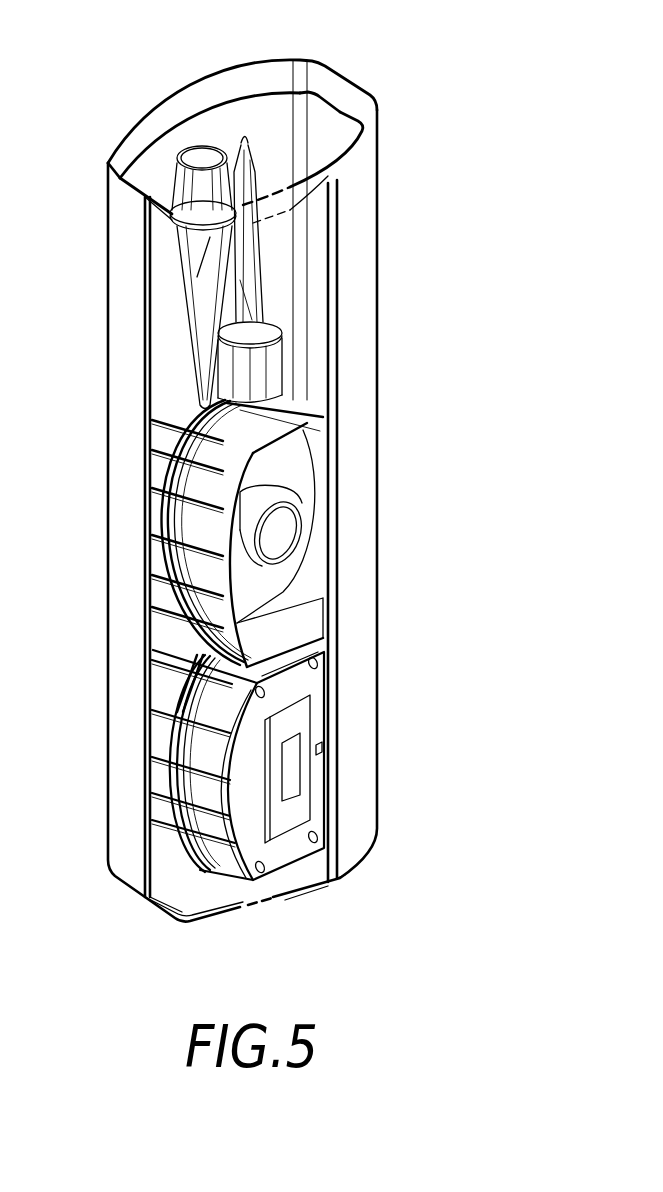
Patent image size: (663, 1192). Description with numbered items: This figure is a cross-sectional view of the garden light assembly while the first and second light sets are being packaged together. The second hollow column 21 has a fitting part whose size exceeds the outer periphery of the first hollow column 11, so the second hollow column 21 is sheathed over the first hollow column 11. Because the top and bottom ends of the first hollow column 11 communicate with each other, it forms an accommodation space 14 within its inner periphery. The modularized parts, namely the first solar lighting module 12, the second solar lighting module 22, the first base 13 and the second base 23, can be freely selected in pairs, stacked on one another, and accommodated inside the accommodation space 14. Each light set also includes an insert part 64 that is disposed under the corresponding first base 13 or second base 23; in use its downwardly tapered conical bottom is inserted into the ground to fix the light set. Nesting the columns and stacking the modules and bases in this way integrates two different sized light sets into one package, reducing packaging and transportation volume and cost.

The first hollow column 11 is at (343, 106).
The first solar lighting module 12 is at (270, 880).
The first base 13 is at (160, 828).
The accommodation space 14 is at (332, 138).
The second hollow column 21 is at (146, 109).
The second solar lighting module 22 is at (170, 393).
The second base 23 is at (307, 530).
The insert part 64 is at (198, 148).